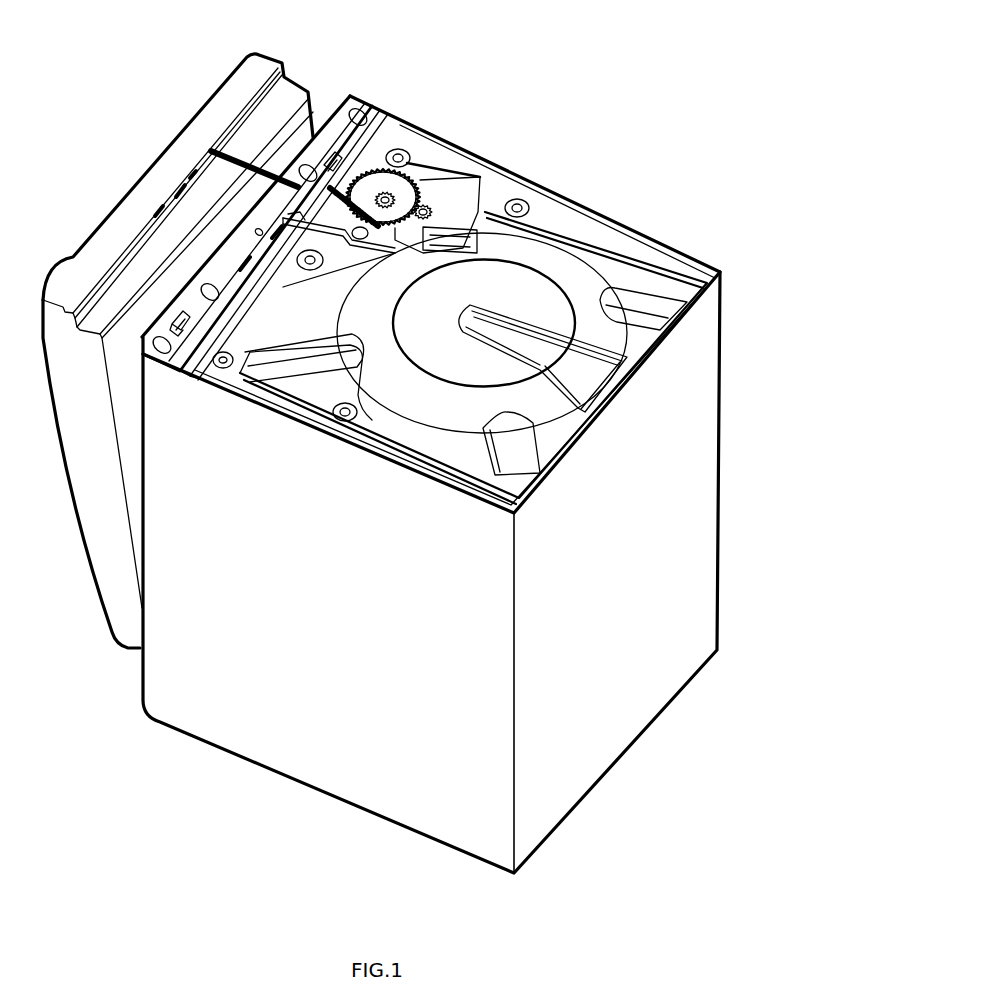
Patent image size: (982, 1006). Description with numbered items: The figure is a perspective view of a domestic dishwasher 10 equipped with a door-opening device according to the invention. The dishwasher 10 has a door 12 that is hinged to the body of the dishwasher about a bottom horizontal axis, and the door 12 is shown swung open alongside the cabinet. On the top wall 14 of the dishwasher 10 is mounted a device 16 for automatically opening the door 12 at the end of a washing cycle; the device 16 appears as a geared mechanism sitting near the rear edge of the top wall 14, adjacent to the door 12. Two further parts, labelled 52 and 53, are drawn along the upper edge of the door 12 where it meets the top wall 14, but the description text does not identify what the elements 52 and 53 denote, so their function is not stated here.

The domestic dishwasher 10 is at (772, 213).
The door 12 is at (312, 61).
The top wall 14 is at (536, 232).
The device for automatically opening the door 16 is at (423, 178).
The slide rail 52 is at (281, 176).
The hinge strip 53 is at (213, 153).